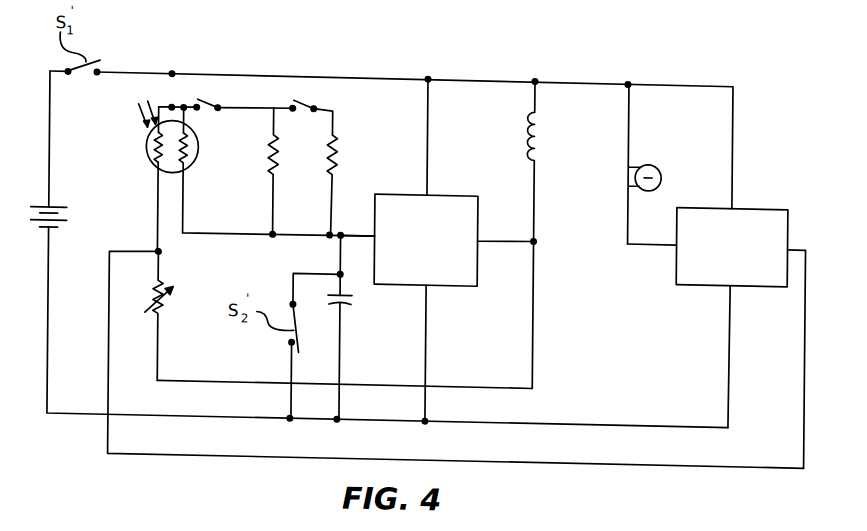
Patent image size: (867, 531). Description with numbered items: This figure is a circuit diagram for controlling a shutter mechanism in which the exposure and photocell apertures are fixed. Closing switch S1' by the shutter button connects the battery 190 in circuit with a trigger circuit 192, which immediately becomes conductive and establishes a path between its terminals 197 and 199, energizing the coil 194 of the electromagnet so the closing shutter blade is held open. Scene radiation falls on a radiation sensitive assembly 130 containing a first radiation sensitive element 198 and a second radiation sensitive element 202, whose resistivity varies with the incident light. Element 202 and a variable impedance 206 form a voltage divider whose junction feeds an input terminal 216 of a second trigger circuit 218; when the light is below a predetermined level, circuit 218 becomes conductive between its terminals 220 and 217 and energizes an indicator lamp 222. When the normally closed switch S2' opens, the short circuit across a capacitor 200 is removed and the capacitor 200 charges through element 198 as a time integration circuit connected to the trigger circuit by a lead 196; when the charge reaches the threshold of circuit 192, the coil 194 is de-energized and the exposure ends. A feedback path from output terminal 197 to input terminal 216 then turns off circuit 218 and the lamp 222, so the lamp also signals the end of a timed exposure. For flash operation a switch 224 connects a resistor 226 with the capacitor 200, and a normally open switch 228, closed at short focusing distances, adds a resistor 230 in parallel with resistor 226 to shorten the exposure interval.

The radiation sensitive assembly 130 is at (204, 154).
The battery 190 is at (65, 212).
The trigger circuit 192 is at (396, 189).
The coil 194 is at (539, 137).
The input lead to trigger circuit 196 is at (369, 229).
The output terminal 197 is at (488, 232).
The first radiation sensitive element 198 is at (193, 139).
The terminal 199 is at (426, 280).
The capacitor 200 is at (354, 293).
The second radiation sensitive element 202 is at (147, 146).
The variable impedance 206 is at (171, 303).
The input terminal 216 is at (795, 234).
The terminal 217 is at (740, 273).
The trigger circuit 218 is at (751, 193).
The terminal 220 is at (669, 231).
The indicator lamp 222 is at (656, 153).
The switch 224 is at (206, 98).
The resistor 226 is at (278, 157).
The normally open switch 228 is at (303, 96).
The resistor 230 is at (335, 128).